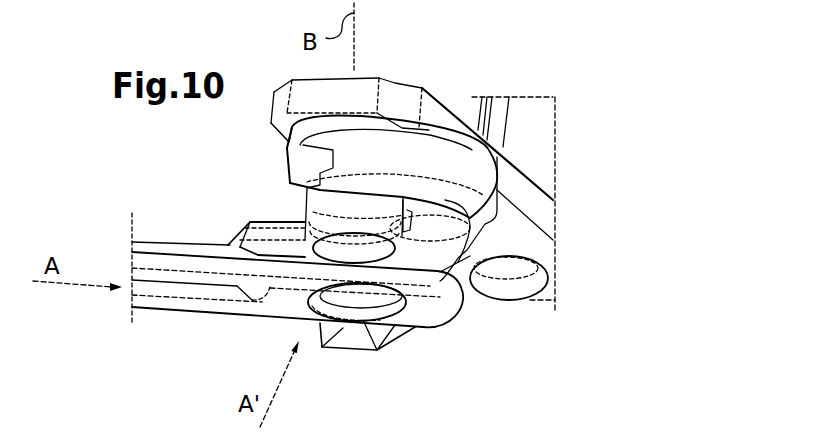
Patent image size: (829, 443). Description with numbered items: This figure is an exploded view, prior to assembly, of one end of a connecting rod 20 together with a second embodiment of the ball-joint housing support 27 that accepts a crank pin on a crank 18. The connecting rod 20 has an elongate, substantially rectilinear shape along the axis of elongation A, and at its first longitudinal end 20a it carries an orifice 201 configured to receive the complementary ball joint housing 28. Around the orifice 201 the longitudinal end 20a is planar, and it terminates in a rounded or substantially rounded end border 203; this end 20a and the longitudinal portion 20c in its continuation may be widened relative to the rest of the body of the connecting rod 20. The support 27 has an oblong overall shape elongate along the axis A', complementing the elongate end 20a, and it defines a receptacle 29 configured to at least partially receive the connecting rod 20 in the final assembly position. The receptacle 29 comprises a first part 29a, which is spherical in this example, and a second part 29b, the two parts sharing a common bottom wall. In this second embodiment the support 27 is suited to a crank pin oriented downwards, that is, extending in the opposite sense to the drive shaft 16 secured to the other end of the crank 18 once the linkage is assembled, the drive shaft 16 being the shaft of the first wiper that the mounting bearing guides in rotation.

The drive shaft 16 is at (557, 113).
The crank 18 is at (515, 183).
The connecting rod 20 is at (125, 292).
The first longitudinal end 20a is at (449, 316).
The longitudinal portion 20c is at (239, 310).
The orifice 201 is at (370, 328).
The end border 203 is at (492, 301).
The support 27 is at (401, 146).
The ball joint housing 28 is at (308, 200).
The receptacle 29 is at (250, 206).
The first part 29a is at (433, 219).
The second part 29b is at (320, 347).